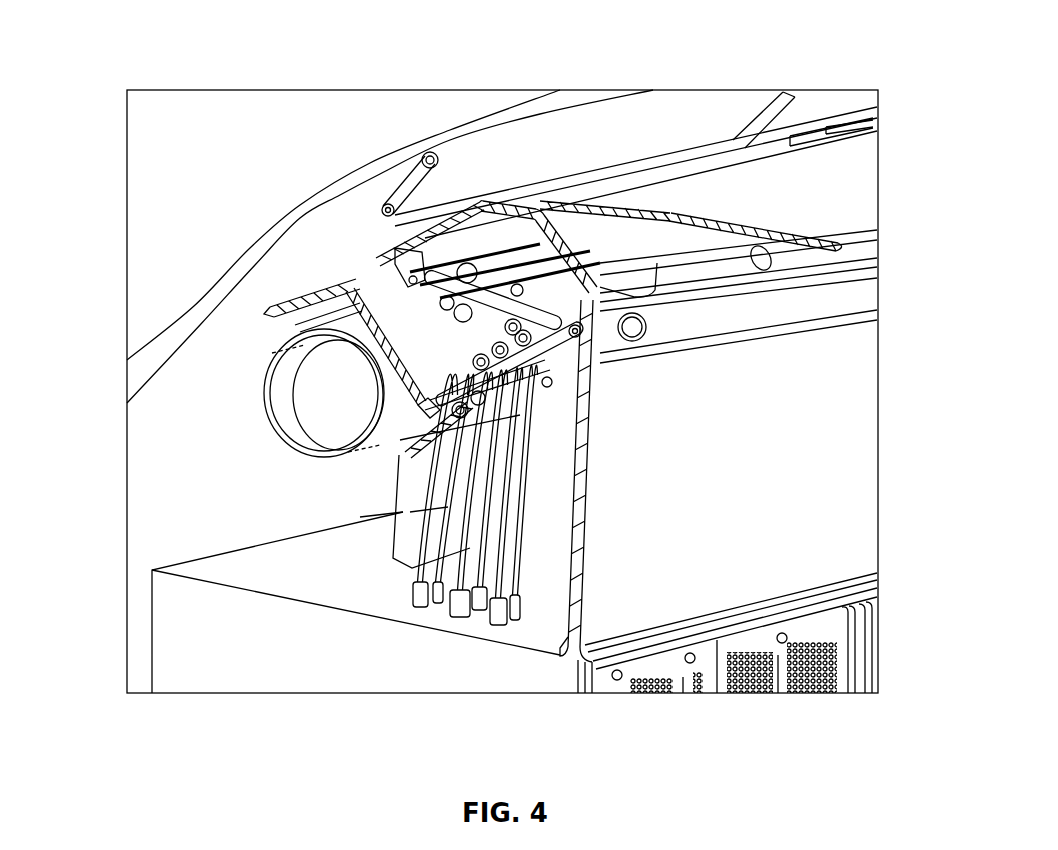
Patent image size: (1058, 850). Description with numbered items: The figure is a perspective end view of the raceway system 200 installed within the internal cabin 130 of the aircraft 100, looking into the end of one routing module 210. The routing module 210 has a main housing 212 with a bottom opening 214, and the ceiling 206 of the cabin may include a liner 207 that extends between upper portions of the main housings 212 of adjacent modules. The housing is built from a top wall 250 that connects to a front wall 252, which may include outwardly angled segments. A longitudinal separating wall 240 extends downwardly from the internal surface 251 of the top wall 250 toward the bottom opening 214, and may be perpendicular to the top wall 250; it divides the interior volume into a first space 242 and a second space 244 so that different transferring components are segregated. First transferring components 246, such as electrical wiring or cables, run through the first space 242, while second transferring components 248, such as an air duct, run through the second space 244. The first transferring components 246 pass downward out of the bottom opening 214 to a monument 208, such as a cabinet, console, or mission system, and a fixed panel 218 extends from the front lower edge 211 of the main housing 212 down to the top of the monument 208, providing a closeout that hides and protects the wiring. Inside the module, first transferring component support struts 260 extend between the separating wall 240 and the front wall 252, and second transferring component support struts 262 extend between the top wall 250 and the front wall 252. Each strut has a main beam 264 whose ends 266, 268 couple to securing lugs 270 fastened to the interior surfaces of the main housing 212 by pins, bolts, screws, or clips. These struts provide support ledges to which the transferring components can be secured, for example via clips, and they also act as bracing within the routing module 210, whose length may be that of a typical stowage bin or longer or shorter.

The aircraft 100 is at (265, 183).
The internal cabin 130 is at (155, 483).
The raceway system 200 is at (530, 197).
The ceiling 206 is at (857, 217).
The liner 207 is at (823, 190).
The monument 208 is at (185, 635).
The routing module 210 is at (680, 160).
The front lower edge 211 is at (608, 325).
The main housing 212 is at (593, 227).
The bottom opening 214 is at (447, 571).
The fixed panel 218 is at (840, 413).
The separating wall 240 is at (433, 358).
The first space 242 is at (488, 233).
The second space 244 is at (283, 333).
The first transferring components 246 is at (447, 443).
The second transferring components 248 is at (272, 430).
The top wall 250 is at (343, 180).
The internal surface 251 is at (448, 255).
The front wall 252 is at (612, 245).
The first transferring component support strut 260 is at (572, 340).
The second transferring component support strut 262 is at (525, 312).
The main beam 264 is at (487, 352).
The end 266 is at (445, 400).
The end 268 is at (597, 352).
The securing lug 270 is at (392, 260).